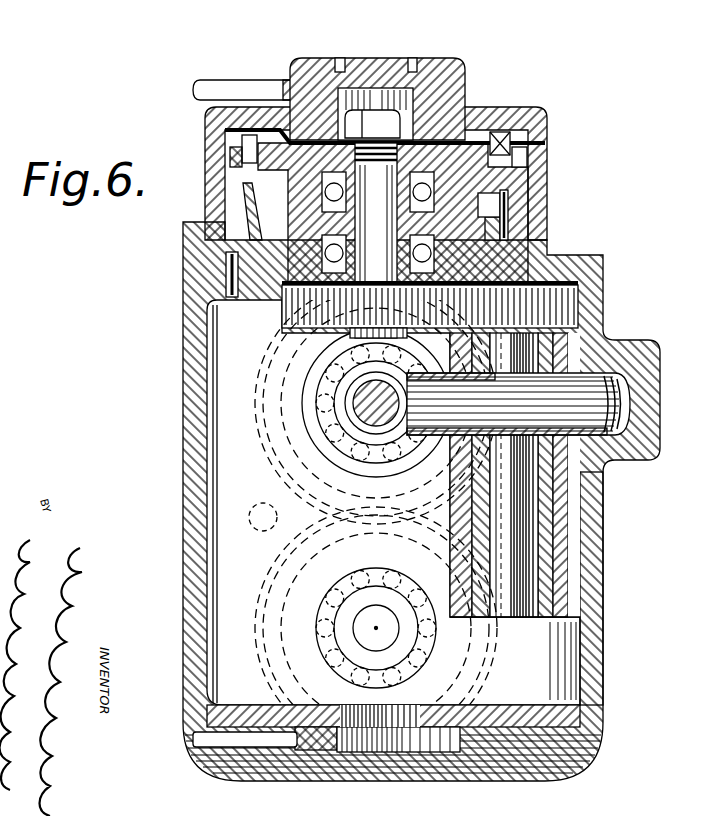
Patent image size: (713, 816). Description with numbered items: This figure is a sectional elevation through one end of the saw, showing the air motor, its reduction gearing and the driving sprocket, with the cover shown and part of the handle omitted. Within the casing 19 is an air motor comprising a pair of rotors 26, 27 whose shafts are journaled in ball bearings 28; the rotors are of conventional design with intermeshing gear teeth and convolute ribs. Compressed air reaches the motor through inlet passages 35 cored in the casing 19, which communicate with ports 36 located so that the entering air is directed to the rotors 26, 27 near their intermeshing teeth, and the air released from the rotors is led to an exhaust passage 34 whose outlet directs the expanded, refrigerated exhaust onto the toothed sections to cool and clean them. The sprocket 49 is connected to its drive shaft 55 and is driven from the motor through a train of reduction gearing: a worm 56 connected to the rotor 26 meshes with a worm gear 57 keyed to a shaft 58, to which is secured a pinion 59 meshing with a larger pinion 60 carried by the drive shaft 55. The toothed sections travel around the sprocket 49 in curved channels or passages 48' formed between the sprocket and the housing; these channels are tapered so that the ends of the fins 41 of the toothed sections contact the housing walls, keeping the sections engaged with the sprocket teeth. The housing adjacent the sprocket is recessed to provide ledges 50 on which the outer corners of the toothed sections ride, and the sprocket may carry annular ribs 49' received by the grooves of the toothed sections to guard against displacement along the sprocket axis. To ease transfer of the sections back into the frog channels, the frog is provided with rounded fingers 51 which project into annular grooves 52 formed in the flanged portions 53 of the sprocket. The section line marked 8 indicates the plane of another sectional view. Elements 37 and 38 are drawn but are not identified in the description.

The section line 8- 8 is at (157, 237).
The casing 19 is at (587, 737).
The rotor 26 is at (277, 333).
The rotor 27 is at (268, 695).
The ball bearings 28 is at (381, 452).
The exhaust passage 34 is at (583, 560).
The inlet passages 35 is at (254, 508).
The ports 36 is at (290, 523).
The bearing cover 37 is at (510, 140).
The spring retainer 38 is at (245, 158).
The guiding portion or fin 41 is at (210, 262).
The curved channels or passages 48' is at (563, 215).
The sprockets 49 is at (488, 120).
The annular ribs 49' is at (572, 144).
The ledges 50 is at (545, 187).
The fingers 51 is at (205, 216).
The annular grooves 52 is at (298, 195).
The flanged portions 53 is at (215, 250).
The drive shaft 55 is at (345, 318).
The worm 56 is at (362, 430).
The worm gear 57 is at (620, 398).
The shaft 58 is at (543, 500).
The pinion 59 is at (570, 312).
The larger pinion 60 is at (303, 305).